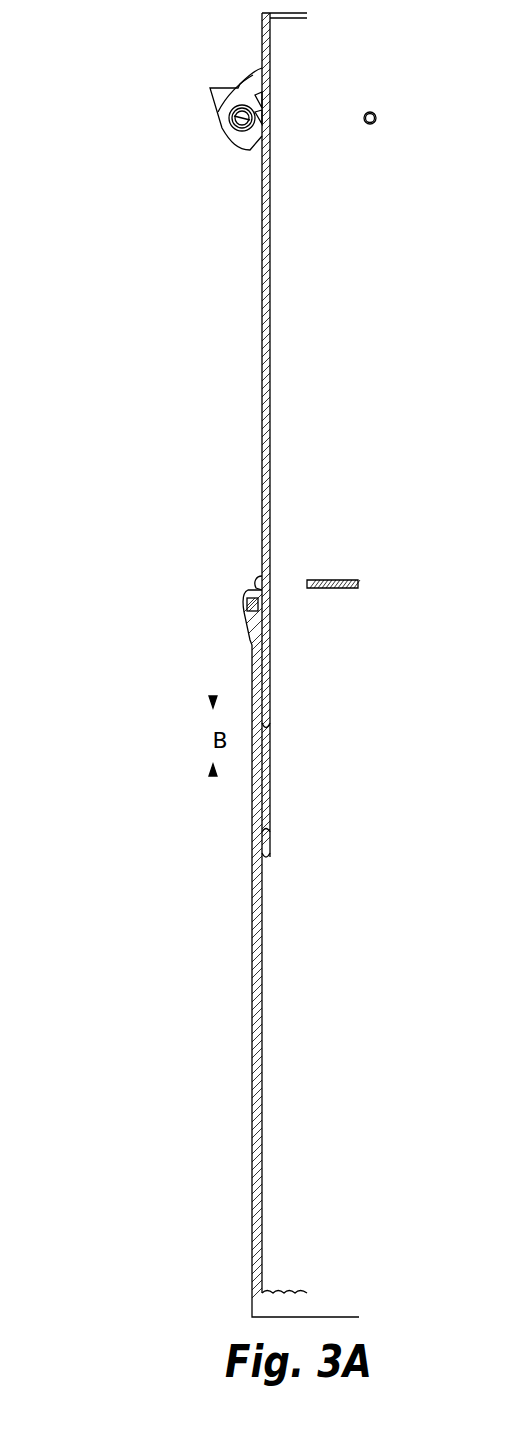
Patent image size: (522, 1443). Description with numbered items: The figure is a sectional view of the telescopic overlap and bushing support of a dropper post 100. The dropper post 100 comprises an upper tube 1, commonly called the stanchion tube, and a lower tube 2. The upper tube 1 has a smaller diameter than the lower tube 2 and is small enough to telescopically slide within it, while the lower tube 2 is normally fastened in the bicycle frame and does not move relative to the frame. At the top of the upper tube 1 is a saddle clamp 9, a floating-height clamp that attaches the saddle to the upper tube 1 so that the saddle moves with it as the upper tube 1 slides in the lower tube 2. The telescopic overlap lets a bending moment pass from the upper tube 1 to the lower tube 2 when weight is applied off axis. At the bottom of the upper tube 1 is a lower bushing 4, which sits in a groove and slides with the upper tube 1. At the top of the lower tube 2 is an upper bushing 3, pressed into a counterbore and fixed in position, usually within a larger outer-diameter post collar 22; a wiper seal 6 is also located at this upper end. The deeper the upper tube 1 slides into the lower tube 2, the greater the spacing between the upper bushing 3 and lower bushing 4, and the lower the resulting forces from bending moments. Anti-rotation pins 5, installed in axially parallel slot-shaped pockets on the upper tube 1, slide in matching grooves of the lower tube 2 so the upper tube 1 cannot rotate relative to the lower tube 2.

The dropper post 100 is at (110, 68).
The upper tube 1 is at (262, 217).
The lower tube 2 is at (252, 965).
The upper bushing 3 is at (255, 637).
The lower bushing 4 is at (257, 840).
The anti-rotation pins 5 is at (265, 688).
The wiper seal 6 is at (252, 580).
The saddle clamp 9 is at (207, 105).
The post collar 22 is at (242, 602).